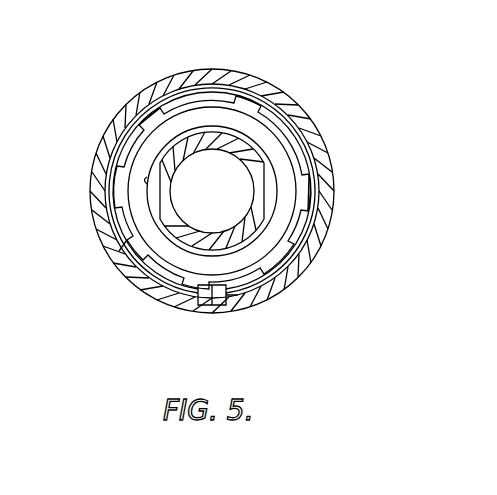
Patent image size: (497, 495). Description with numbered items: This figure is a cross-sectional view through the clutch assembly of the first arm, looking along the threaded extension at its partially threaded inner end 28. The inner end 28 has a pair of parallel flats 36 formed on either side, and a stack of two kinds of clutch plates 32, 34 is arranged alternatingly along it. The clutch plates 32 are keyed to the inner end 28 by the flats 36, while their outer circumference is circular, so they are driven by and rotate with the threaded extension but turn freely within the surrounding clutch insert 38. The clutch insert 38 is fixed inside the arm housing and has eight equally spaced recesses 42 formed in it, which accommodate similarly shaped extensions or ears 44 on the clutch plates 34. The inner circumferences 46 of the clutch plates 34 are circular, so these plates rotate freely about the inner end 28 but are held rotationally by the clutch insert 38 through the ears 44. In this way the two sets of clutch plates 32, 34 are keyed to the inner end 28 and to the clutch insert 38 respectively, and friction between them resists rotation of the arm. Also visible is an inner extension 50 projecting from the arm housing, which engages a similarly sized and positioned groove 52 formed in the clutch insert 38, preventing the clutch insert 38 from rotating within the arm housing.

The inner end 28 is at (295, 149).
The clutch plates 32 is at (148, 204).
The clutch plates 34 is at (138, 223).
The parallel flats 36 is at (304, 177).
The clutch insert 38 is at (271, 117).
The recesses 42 is at (243, 92).
The ears 44 is at (128, 249).
The inner circumferences 46 is at (147, 180).
The inner extension 50 is at (203, 289).
The groove 52 is at (226, 287).